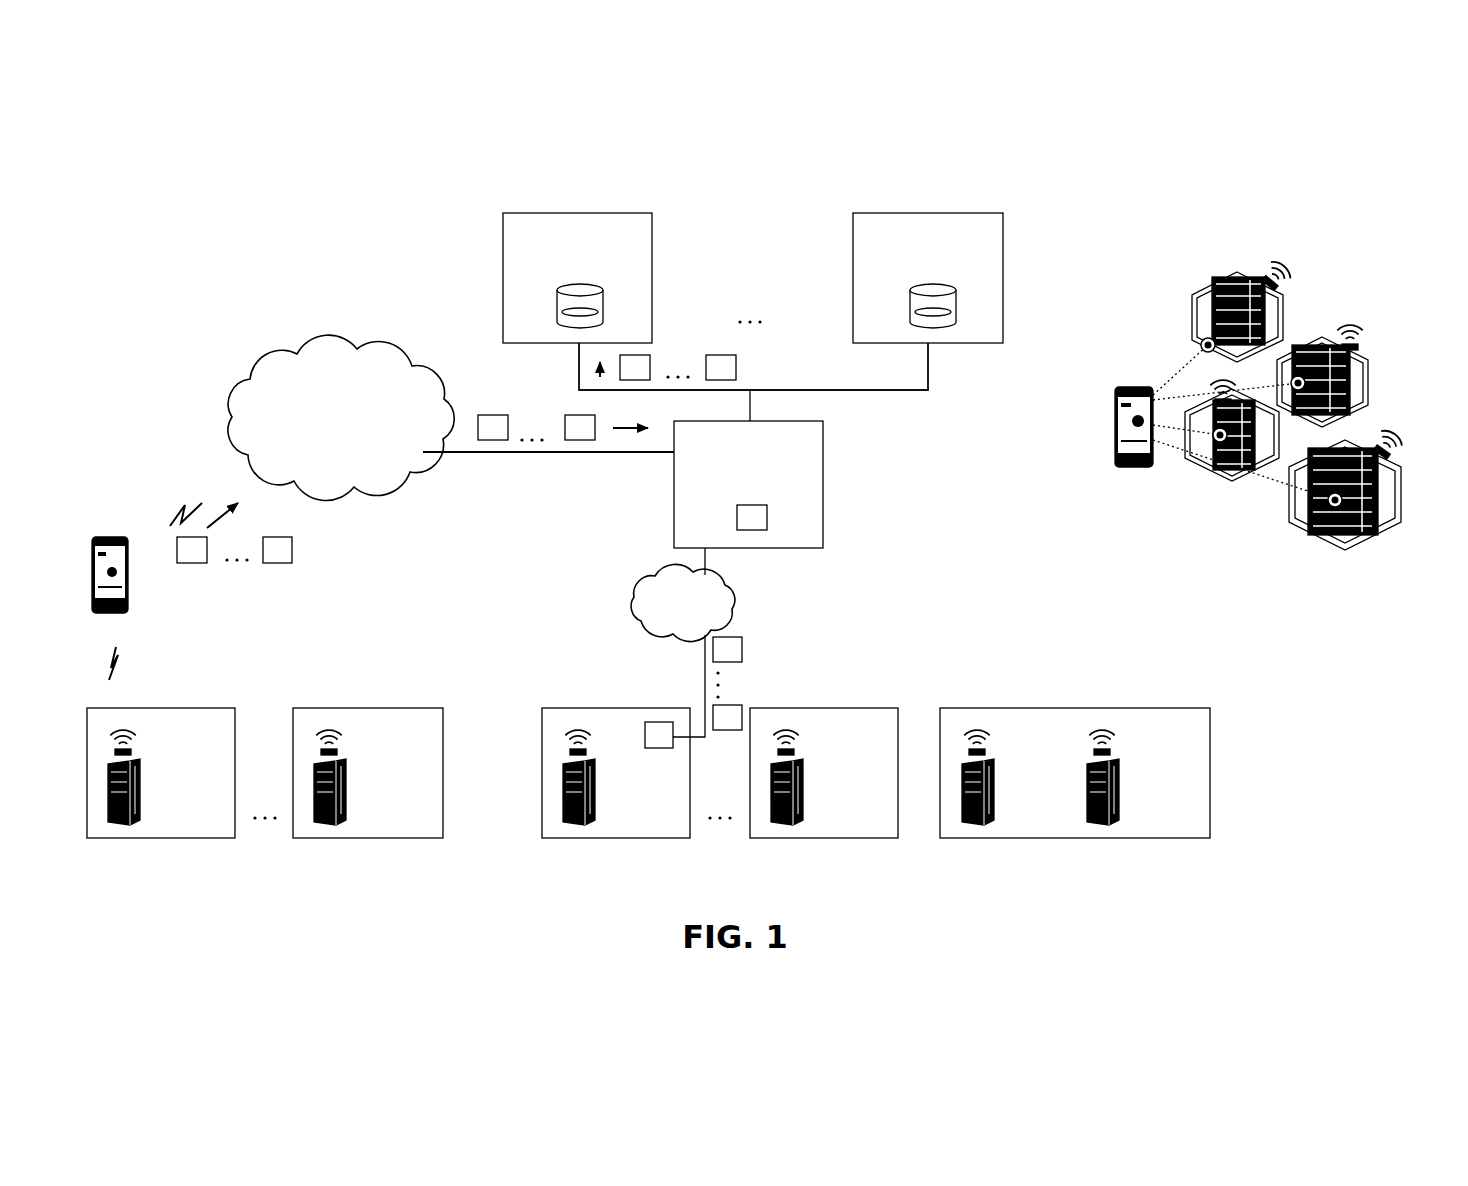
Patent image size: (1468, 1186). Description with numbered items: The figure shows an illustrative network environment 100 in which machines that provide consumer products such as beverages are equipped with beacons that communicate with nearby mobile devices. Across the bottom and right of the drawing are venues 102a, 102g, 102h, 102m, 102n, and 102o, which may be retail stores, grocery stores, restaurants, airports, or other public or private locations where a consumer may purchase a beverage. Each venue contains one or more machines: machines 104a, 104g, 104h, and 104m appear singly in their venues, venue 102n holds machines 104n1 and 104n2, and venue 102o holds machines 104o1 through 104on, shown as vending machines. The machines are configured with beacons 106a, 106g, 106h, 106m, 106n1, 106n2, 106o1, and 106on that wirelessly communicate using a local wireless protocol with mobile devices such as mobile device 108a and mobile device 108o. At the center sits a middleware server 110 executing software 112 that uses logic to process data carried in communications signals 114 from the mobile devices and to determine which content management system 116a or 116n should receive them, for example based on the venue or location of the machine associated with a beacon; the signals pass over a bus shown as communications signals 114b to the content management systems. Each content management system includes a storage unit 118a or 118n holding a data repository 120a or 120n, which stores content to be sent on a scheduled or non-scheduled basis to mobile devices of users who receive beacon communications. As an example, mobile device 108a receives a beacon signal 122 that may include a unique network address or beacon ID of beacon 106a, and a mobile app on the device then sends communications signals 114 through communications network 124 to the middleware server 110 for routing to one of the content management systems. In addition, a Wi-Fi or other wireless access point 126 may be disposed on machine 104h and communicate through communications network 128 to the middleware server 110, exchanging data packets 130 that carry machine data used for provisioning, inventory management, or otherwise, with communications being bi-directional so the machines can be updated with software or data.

The network environment 100 is at (753, 275).
The venue 102a is at (186, 789).
The venue 102g is at (370, 789).
The venue 102h is at (640, 789).
The venue 102m is at (831, 789).
The venue 102n is at (1084, 788).
The venue 102o is at (1249, 362).
The machine 104a is at (137, 798).
The machine 104g is at (338, 797).
The machine 104h is at (590, 797).
The machine 104m is at (798, 797).
The machine 104n1 is at (992, 797).
The machine 104n2 is at (1113, 797).
The machine 104o1 is at (1258, 274).
The machine 104on is at (1372, 473).
The beacon 106a is at (142, 748).
The beacon 106g is at (338, 748).
The beacon 106h is at (590, 748).
The beacon 106m is at (798, 748).
The beacon 106n1 is at (992, 747).
The beacon 106n2 is at (1113, 747).
The beacon 106o1 is at (1290, 258).
The beacon 106on is at (1388, 427).
The mobile device 108a is at (110, 532).
The mobile device 108o is at (1112, 427).
The middleware server 110 is at (751, 484).
The software 112 is at (733, 517).
The communications signals 114 is at (527, 395).
The communications signals 114b is at (888, 392).
The content management system 116a is at (583, 263).
The content management system 116n is at (931, 263).
The storage unit 118a is at (575, 287).
The storage unit 118n is at (931, 288).
The data repository 120a is at (603, 310).
The data repository 120n is at (957, 310).
The beacon signal 122 is at (128, 662).
The communications network 124 is at (451, 417).
The wireless access point 126 is at (673, 745).
The communications network 128 is at (638, 582).
The data packets 130 is at (764, 648).